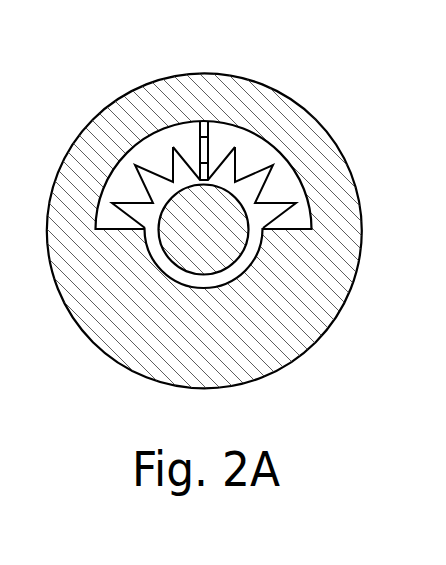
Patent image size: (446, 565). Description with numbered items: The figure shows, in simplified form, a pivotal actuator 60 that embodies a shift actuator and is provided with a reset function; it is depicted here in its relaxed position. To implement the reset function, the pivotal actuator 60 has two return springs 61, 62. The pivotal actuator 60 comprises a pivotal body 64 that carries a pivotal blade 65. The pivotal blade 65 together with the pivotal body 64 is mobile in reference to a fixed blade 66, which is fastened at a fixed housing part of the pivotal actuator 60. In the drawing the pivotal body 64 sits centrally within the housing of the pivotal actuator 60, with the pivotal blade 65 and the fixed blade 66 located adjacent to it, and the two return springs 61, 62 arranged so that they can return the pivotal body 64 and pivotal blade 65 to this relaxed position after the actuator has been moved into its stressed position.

The pivotal actuator 60 is at (290, 95).
The return spring 61 is at (174, 146).
The return spring 62 is at (272, 178).
The pivotal body 64 is at (228, 230).
The pivotal blade 65 is at (203, 178).
The fixed blade 66 is at (208, 123).